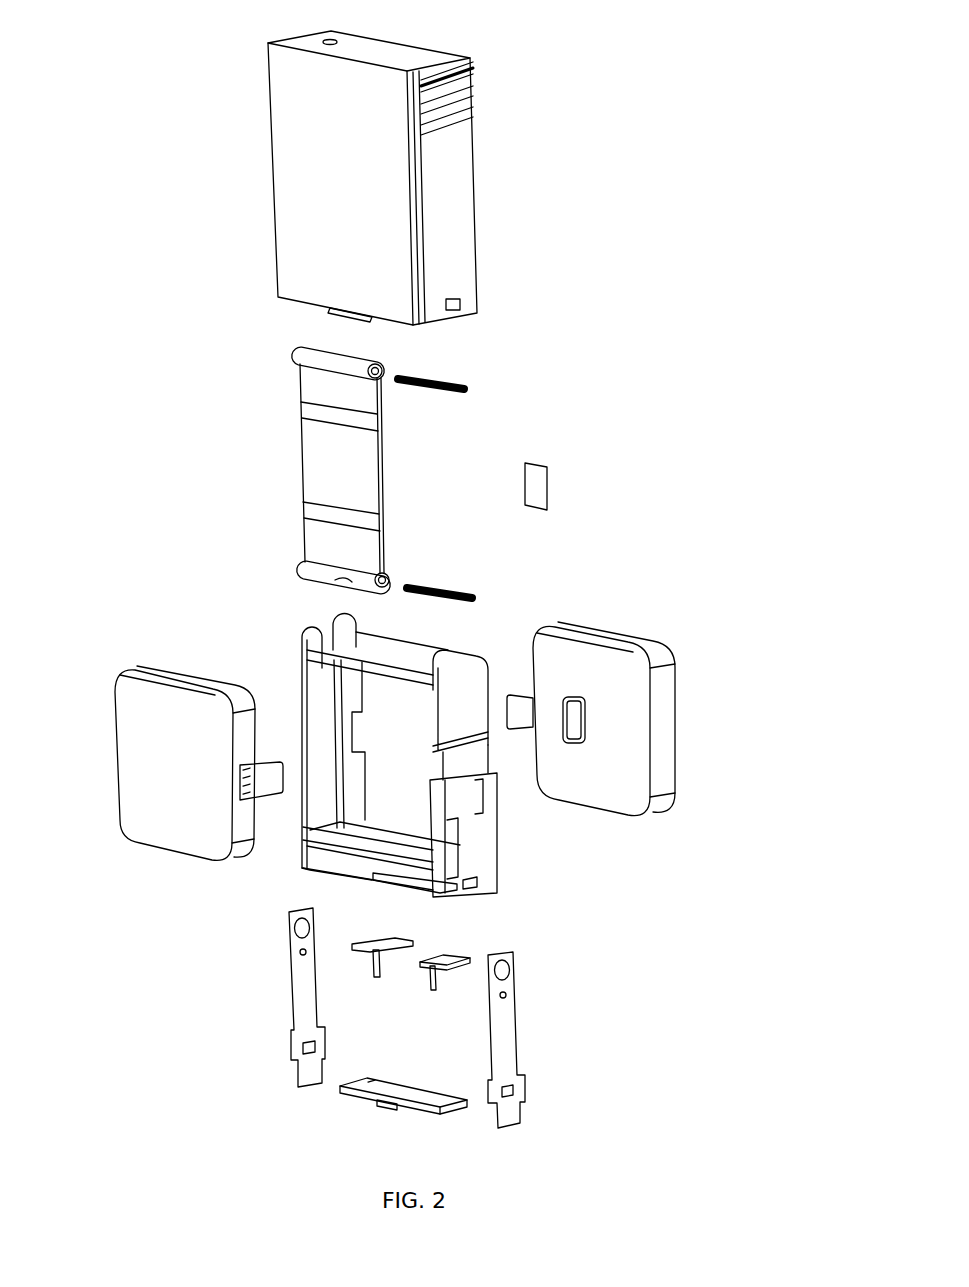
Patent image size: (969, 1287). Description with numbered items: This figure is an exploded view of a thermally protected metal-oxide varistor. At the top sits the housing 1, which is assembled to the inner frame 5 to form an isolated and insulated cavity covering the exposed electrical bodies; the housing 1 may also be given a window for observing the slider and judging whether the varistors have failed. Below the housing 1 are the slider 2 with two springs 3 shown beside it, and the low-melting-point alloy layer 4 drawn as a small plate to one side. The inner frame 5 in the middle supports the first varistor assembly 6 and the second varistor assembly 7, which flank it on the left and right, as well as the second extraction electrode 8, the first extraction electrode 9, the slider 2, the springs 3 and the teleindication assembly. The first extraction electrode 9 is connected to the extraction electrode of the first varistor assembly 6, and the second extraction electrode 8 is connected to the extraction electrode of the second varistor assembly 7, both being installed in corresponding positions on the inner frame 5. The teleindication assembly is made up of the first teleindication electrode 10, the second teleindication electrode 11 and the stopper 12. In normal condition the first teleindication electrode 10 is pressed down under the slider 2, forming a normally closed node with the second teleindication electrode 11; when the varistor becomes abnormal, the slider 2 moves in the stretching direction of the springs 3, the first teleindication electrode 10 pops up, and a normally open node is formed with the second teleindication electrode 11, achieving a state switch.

The housing 1 is at (320, 208).
The slider 2 is at (338, 480).
The spring 3 is at (455, 380).
The low-melting-point alloy layer 4 is at (538, 491).
The inner frame 5 is at (317, 672).
The first varistor assembly 6 is at (170, 765).
The second varistor assembly 7 is at (627, 733).
The second extraction electrode 8 is at (307, 997).
The first extraction electrode 9 is at (510, 1042).
The first teleindication electrode 10 is at (413, 942).
The second teleindication electrode 11 is at (470, 958).
The stopper 12 is at (350, 1098).